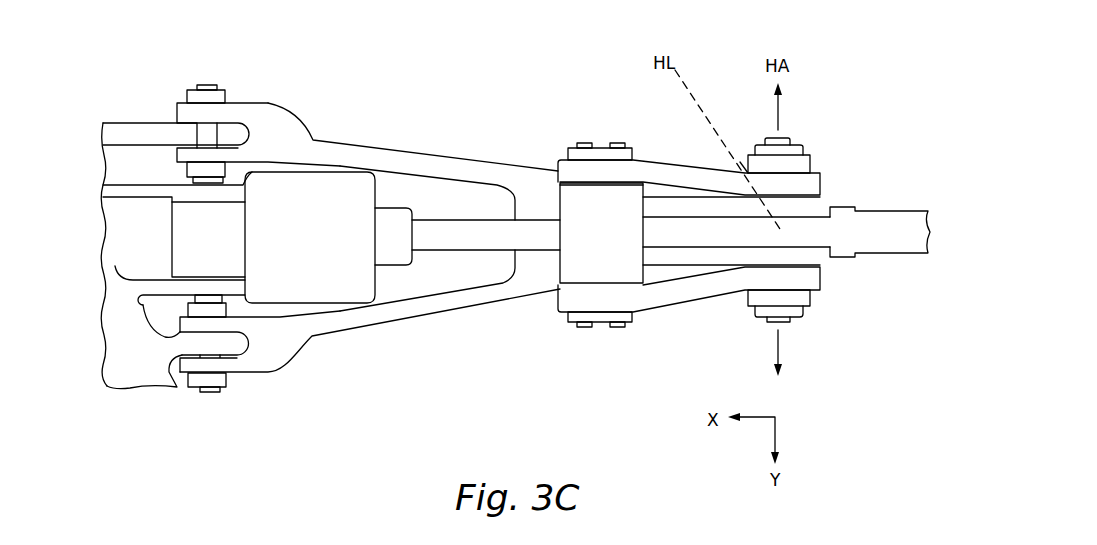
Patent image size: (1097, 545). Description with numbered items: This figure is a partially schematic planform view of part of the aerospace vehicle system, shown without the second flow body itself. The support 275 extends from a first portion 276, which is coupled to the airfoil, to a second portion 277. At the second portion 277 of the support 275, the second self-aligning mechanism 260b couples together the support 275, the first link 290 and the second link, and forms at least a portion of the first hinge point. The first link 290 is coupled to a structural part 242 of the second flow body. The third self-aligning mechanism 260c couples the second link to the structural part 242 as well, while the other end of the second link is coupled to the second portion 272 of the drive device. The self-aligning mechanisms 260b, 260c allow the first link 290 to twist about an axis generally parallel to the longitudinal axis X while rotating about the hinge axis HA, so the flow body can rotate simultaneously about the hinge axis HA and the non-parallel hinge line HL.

The support 275 is at (395, 140).
The first portion of the support 276 is at (332, 141).
The second portion of the support 277 is at (497, 162).
The second portion of the drive device 272 is at (627, 257).
The structural part of the second flow body 242 is at (878, 258).
The first link 290 is at (917, 245).
The second self-aligning mechanism 260b is at (801, 129).
The third self-aligning mechanism 260c is at (739, 155).